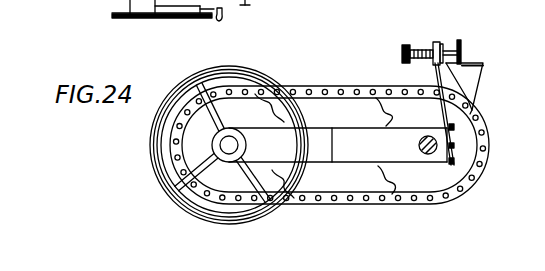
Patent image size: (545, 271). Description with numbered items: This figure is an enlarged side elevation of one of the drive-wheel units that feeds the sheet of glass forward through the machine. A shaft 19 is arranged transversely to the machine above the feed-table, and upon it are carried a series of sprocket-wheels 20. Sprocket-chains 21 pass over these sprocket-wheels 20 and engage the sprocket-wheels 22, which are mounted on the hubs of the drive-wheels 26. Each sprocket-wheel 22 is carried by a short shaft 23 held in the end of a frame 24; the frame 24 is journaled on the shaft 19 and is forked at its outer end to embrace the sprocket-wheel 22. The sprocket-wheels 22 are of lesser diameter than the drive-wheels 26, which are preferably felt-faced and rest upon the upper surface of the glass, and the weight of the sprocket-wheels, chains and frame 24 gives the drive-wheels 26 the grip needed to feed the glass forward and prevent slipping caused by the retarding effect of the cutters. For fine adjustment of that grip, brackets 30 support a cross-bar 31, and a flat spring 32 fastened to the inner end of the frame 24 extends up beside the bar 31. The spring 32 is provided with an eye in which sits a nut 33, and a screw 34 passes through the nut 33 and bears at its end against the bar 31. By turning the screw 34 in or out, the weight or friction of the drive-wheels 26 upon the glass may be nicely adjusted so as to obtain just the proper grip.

The shaft 19 is at (435, 152).
The sprocket-wheels 20 is at (402, 146).
The sprocket-chains 21 is at (368, 205).
The sprocket-wheels 22 is at (234, 143).
The short shafts 23 is at (230, 140).
The frames 24 is at (338, 145).
The drive-wheels 26 is at (231, 223).
The brackets 30 is at (479, 78).
The cross-bar 31 is at (462, 49).
The flat spring 32 is at (467, 110).
The nut 33 is at (439, 44).
The screw 34 is at (420, 48).